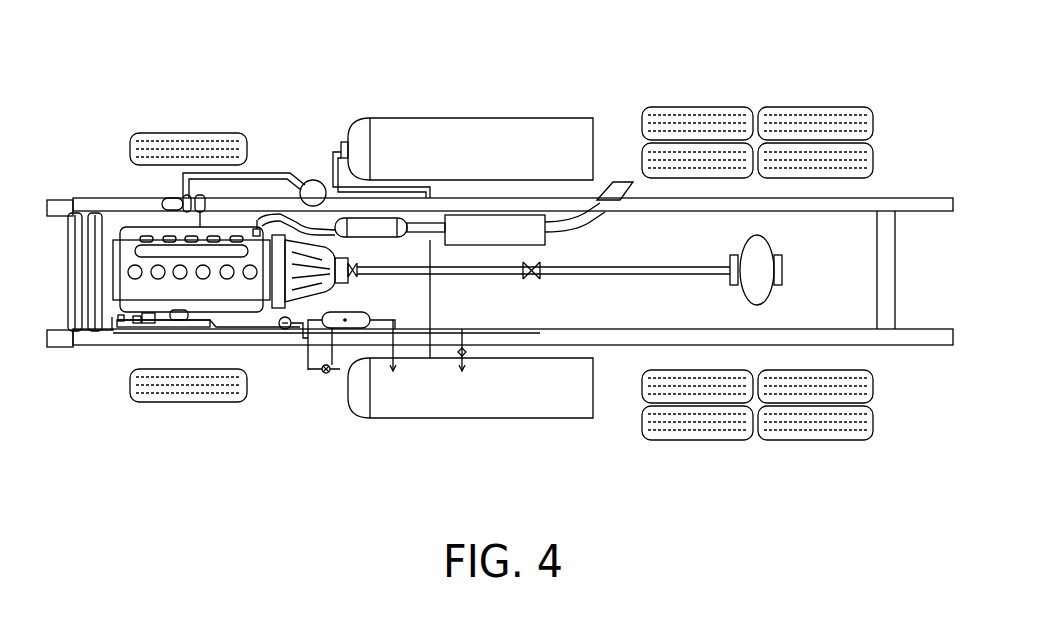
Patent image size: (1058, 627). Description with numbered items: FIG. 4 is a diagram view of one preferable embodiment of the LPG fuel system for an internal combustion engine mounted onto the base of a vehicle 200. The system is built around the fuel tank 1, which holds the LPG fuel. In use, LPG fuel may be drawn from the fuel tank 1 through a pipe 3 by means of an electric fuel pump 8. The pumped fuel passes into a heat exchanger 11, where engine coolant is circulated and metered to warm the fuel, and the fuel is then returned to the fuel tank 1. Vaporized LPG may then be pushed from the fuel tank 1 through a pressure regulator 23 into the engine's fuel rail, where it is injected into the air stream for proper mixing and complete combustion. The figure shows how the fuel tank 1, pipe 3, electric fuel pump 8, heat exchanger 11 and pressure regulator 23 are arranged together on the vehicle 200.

The fuel tank 1 is at (462, 140).
The vehicle 200 is at (866, 205).
The pressure regulator 23 is at (283, 330).
The pipe 3 is at (308, 363).
The electric fuel pump 8 is at (323, 373).
The heat exchanger 11 is at (332, 372).